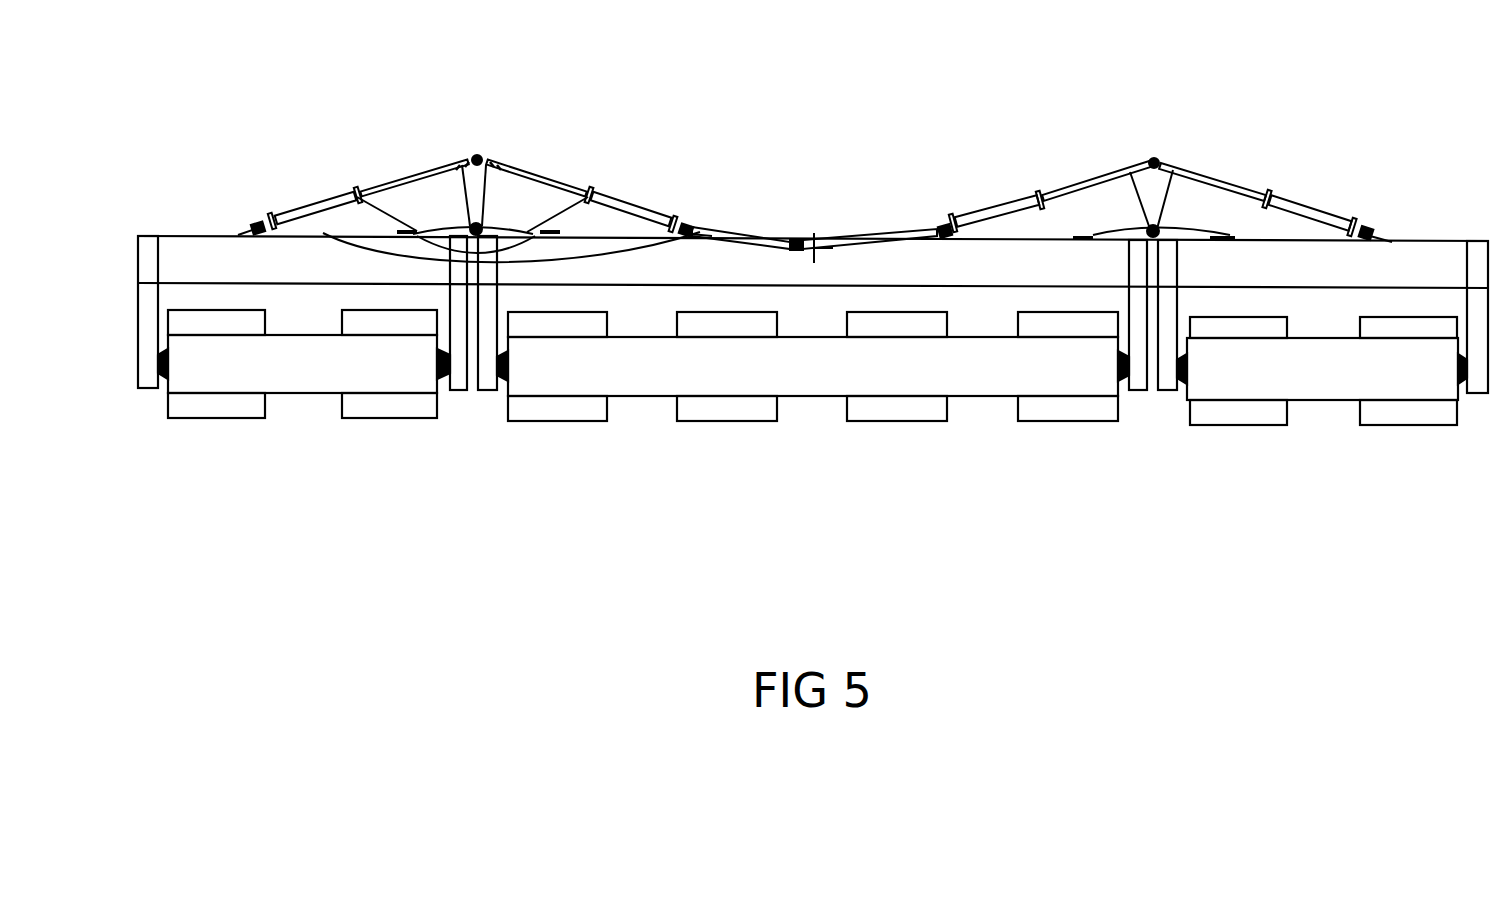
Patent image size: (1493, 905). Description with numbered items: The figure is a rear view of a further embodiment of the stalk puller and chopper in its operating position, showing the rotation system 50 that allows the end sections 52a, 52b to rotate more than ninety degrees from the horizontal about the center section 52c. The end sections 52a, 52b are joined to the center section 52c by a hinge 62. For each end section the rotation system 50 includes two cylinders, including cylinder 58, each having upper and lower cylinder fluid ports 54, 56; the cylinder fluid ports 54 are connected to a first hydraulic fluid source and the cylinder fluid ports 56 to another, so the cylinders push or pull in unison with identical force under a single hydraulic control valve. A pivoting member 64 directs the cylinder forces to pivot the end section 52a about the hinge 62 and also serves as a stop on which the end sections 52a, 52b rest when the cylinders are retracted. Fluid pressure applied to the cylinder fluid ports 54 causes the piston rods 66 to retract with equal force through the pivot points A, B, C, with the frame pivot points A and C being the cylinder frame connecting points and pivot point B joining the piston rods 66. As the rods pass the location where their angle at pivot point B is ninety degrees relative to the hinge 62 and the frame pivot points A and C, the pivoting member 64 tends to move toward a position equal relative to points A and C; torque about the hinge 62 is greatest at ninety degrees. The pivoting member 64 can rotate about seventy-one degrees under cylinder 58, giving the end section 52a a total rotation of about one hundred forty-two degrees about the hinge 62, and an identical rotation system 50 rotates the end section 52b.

The rotation system 50 is at (642, 108).
The end section 52a is at (306, 400).
The end section 52b is at (1320, 405).
The center section 52c is at (976, 375).
The upper cylinder fluid port 54 is at (355, 196).
The lower cylinder fluid port 56 is at (270, 220).
The cylinder 58 is at (311, 210).
The hinge 62 is at (488, 232).
The pivoting member 64 is at (456, 172).
The piston rod 66 is at (402, 185).
The frame pivot point A is at (250, 226).
The pivot point B is at (479, 156).
The frame pivot point C is at (706, 227).